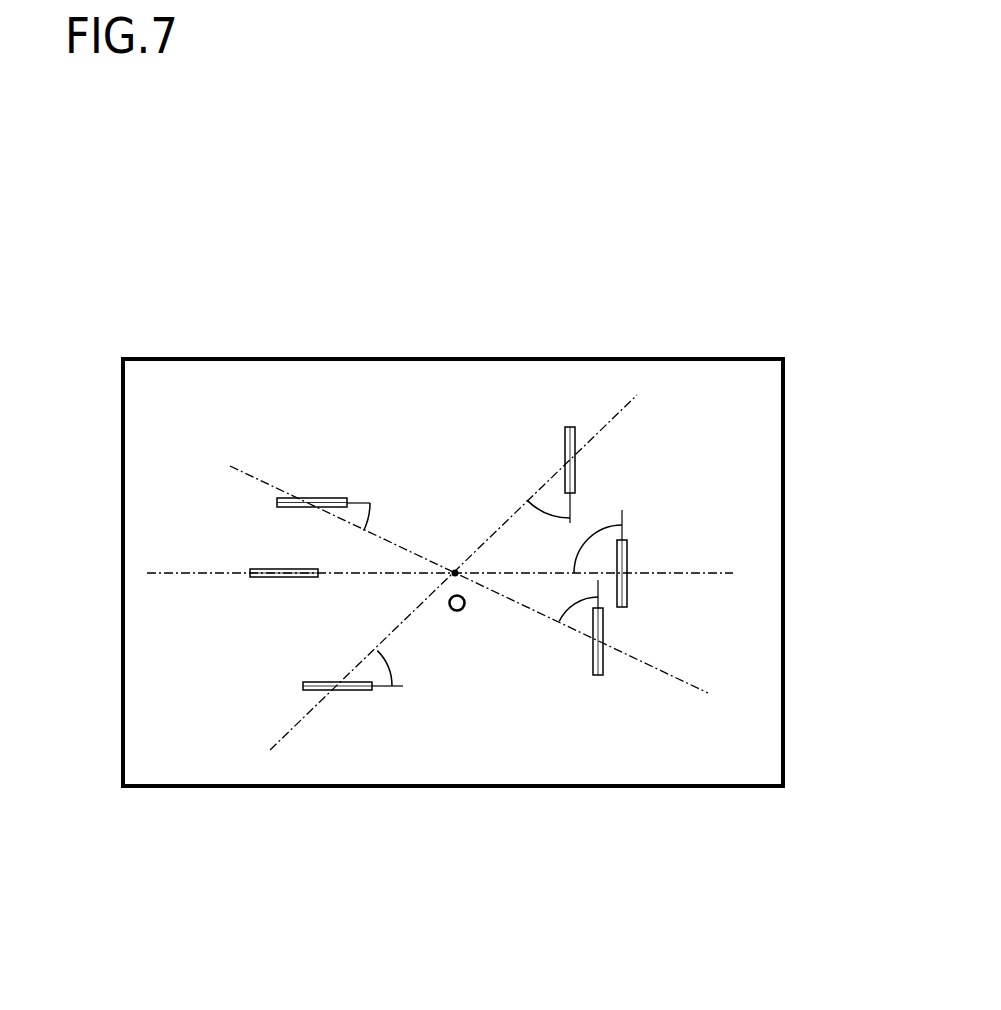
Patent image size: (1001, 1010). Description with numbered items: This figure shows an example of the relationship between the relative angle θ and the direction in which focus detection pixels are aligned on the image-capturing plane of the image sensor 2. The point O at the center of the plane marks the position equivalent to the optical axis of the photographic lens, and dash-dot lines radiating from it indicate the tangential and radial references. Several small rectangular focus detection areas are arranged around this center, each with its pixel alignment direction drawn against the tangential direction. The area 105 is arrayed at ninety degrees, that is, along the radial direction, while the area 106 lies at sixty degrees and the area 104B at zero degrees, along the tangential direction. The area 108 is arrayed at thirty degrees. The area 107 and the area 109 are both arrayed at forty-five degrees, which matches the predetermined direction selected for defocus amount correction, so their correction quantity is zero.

The image sensor 2 is at (352, 360).
The area 104B is at (236, 585).
The area 105 is at (640, 590).
The area 106 is at (601, 695).
The area 107 is at (336, 705).
The area 108 is at (316, 480).
The area 109 is at (554, 432).